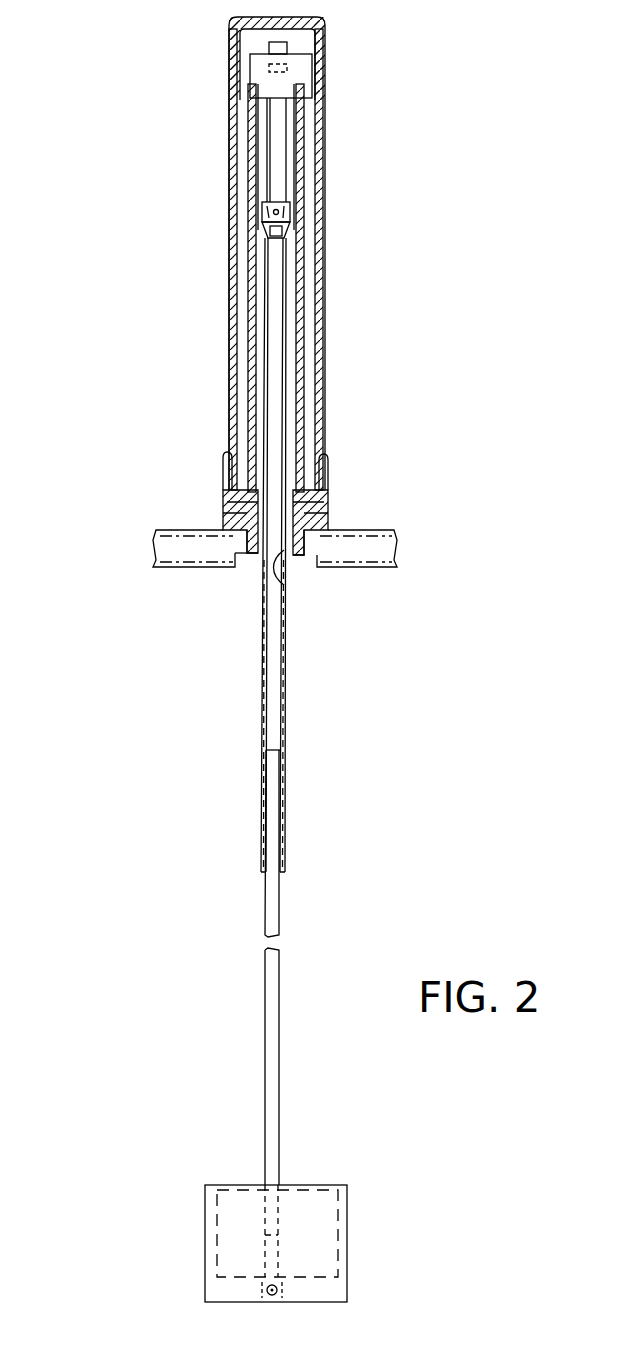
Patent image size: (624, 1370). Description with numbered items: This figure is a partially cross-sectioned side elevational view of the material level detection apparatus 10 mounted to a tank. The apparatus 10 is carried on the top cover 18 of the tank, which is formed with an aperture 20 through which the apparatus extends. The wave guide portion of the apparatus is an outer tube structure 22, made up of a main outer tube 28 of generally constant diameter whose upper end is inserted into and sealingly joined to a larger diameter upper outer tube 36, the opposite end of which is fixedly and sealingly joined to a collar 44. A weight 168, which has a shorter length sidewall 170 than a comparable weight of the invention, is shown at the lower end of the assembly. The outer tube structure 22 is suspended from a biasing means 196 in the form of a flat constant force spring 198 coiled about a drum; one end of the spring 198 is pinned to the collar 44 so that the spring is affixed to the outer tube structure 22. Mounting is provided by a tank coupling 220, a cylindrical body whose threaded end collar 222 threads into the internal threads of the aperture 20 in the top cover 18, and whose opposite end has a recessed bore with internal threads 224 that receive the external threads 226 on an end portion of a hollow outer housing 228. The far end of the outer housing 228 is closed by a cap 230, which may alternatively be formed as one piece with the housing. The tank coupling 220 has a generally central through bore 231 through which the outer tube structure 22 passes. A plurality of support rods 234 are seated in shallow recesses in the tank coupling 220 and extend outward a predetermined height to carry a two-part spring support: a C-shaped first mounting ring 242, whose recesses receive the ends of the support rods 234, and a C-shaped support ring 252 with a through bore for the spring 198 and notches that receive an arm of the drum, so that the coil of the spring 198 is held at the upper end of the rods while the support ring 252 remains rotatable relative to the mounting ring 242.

The material level detection apparatus 10 is at (315, 659).
The top surface or cover 18 is at (170, 527).
The aperture 20 is at (230, 570).
The outer tube structure 22 is at (260, 727).
The main or first outer tube 28 is at (270, 1050).
The upper outer tube 36 is at (260, 740).
The collar 44 is at (262, 212).
The weight 168 is at (405, 1168).
The sidewall 170 is at (347, 1230).
The biasing means 196 is at (265, 143).
The flat constant force spring 198 is at (270, 110).
The tank coupling 220 is at (337, 480).
The threaded end collar 222 is at (300, 550).
The internal threads 224 is at (317, 460).
The external threads 226 is at (235, 485).
The hollow outer housing 228 is at (327, 283).
The cap 230 is at (321, 39).
The through bore 231 is at (283, 585).
The support rods 234 is at (250, 247).
The first mounting ring 242 is at (252, 84).
The support ring 252 is at (247, 52).